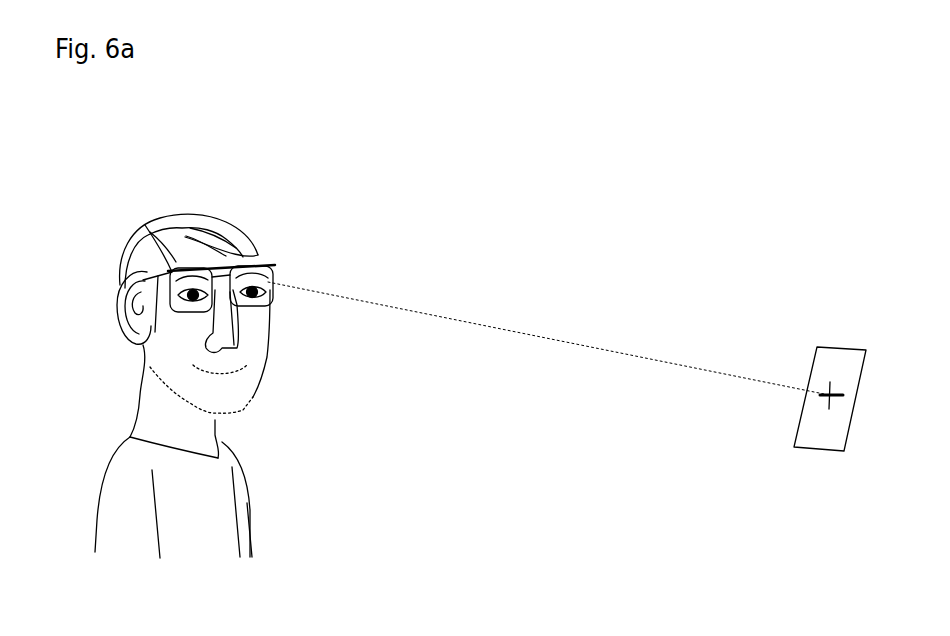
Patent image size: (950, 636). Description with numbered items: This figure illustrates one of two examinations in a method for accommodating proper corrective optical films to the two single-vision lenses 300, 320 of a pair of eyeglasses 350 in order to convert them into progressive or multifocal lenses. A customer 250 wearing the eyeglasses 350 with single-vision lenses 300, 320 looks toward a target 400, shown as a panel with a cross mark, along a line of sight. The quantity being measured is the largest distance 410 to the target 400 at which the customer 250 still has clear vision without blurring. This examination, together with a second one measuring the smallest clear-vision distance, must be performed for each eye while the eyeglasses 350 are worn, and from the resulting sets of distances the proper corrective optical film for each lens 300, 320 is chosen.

The customer 250 is at (213, 207).
The eyeglasses 350 is at (265, 267).
The single-vision lens 300 is at (258, 288).
The single-vision lens 320 is at (183, 290).
The largest distance 410 is at (442, 313).
The target 400 is at (829, 392).